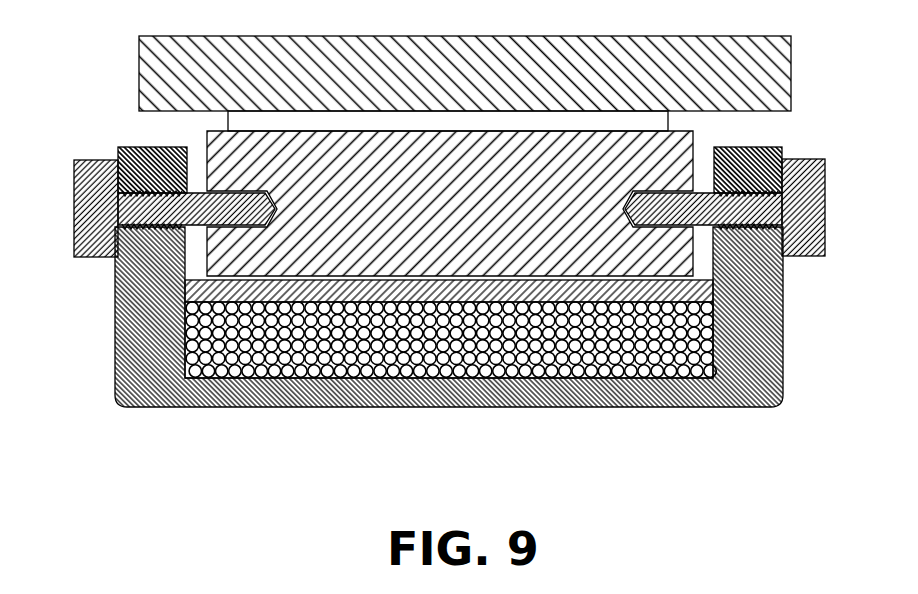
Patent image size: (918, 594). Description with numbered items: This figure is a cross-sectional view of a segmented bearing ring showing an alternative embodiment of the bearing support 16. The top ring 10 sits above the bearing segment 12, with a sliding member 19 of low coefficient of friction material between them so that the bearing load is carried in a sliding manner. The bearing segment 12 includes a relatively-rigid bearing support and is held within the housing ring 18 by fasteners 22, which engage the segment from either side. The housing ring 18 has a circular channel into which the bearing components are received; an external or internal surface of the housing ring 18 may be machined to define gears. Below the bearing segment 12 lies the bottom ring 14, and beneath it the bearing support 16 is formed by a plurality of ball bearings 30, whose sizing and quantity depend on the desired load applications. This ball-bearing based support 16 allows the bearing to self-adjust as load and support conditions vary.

The top ring 10 is at (763, 68).
The bearing segments 12 is at (217, 138).
The bottom ring 14 is at (698, 284).
The bearing support 16 is at (710, 367).
The housing ring 18 is at (132, 396).
The sliding member 19 is at (670, 121).
The fasteners 22 is at (92, 236).
The ball bearings 30 is at (262, 372).